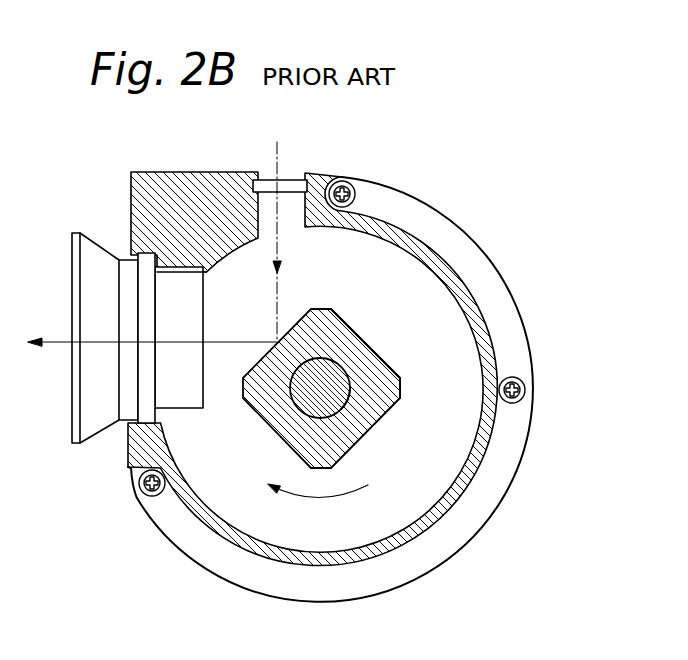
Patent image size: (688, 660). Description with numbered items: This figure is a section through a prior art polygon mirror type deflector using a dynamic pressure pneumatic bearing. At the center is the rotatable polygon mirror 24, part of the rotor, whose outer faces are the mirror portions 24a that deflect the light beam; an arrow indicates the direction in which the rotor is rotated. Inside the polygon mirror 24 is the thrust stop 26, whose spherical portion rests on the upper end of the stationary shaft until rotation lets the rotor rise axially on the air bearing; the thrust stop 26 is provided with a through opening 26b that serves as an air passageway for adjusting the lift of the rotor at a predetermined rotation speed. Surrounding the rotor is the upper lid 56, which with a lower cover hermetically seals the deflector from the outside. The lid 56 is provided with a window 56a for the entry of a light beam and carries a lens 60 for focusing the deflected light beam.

The polygon mirror 24 is at (350, 344).
The mirror portions 24a is at (397, 360).
The thrust stop 26 is at (340, 390).
The through opening 26b is at (343, 407).
The upper lid 56 is at (130, 461).
The window 56a is at (293, 178).
The lens 60 is at (99, 256).